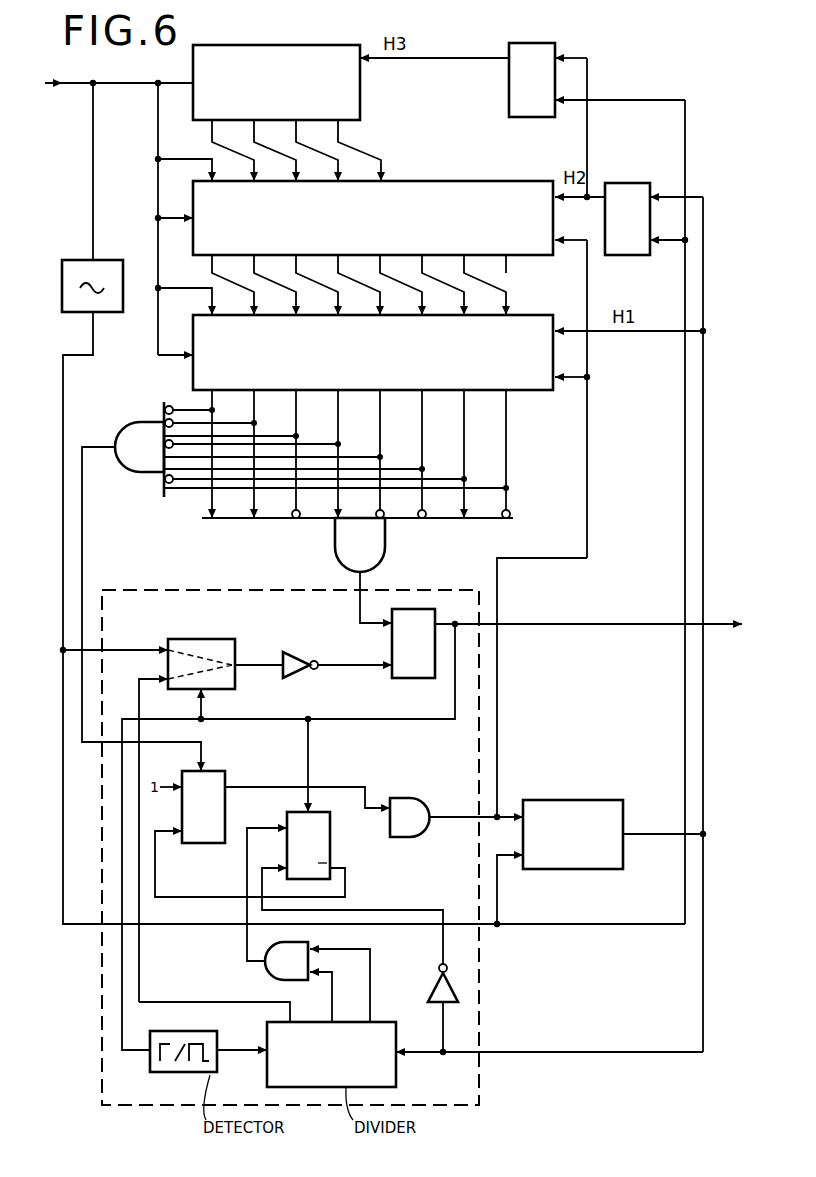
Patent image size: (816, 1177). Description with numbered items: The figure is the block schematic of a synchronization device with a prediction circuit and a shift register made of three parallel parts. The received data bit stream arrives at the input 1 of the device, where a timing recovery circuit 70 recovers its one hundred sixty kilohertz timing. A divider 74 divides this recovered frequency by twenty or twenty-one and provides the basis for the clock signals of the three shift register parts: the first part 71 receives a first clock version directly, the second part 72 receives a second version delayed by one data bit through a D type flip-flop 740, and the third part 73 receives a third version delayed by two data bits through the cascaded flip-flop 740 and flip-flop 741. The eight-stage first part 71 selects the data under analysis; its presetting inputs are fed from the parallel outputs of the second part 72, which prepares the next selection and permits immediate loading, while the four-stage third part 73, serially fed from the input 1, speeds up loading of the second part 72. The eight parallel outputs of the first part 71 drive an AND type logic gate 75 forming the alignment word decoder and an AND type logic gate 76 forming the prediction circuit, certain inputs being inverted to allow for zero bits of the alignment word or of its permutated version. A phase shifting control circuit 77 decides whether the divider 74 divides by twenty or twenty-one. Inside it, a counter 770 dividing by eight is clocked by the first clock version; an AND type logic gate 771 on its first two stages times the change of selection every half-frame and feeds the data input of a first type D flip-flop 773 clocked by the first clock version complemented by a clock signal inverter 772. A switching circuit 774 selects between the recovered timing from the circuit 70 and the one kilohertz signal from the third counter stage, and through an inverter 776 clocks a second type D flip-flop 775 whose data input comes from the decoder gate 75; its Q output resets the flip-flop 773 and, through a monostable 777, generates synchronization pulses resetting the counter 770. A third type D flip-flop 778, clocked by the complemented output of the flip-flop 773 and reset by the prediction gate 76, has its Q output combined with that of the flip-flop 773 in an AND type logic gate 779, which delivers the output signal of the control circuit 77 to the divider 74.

The input of the device 1 is at (74, 86).
The timing recovery circuit 70 is at (80, 270).
The first part of the shift register 71 is at (527, 325).
The second part of the shift register 72 is at (458, 192).
The third part of the shift register 73 is at (244, 55).
The divider 74 is at (599, 773).
The AND type logic gate 75 is at (380, 548).
The AND type logic gate 76 is at (134, 425).
The phase shifting control circuit 77 is at (157, 590).
The D type flip-flop 740 is at (623, 192).
The D type flip-flop 741 is at (530, 55).
The counter 770 is at (388, 1075).
The AND type logic gate 771 is at (285, 962).
The clock signal inverter 772 is at (435, 990).
The first type D flip-flop 773 is at (333, 848).
The switching circuit 774 is at (200, 646).
The second type D flip-flop 775 is at (422, 675).
The inverter 776 is at (295, 652).
The monostable 777 is at (194, 1070).
The third type D flip-flop 778 is at (211, 845).
The AND type logic gate 779 is at (407, 800).